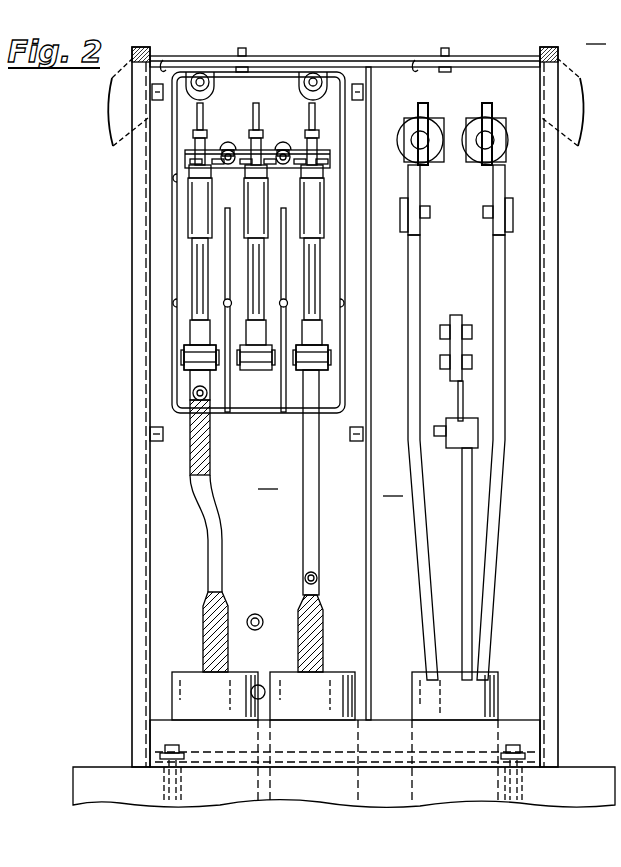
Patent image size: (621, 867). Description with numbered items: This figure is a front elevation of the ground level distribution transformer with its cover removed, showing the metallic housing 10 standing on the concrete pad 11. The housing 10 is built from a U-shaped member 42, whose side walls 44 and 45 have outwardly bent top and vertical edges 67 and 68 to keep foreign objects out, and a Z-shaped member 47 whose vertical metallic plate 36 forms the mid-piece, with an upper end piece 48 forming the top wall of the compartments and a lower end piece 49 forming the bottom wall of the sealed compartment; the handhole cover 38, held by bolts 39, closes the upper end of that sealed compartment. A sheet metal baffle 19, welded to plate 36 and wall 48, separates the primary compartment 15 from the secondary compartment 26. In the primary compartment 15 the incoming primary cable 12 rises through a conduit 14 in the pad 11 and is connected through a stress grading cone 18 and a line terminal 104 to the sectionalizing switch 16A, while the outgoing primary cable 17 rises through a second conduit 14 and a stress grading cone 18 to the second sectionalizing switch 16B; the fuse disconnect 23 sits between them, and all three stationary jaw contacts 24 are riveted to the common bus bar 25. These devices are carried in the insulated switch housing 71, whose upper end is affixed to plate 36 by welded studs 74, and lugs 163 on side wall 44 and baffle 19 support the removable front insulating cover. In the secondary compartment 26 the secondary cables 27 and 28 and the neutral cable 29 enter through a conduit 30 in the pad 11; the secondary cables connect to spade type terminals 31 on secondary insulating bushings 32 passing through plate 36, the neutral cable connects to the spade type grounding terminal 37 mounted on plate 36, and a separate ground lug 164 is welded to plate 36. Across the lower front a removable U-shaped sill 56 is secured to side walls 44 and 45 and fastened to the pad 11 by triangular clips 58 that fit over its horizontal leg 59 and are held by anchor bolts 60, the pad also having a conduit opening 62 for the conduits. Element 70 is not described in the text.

The metallic housing 10 is at (596, 36).
The concrete pad 11 is at (95, 776).
The incoming primary underground jacketed cable 12 is at (207, 516).
The conduit 14 is at (195, 682).
The primary compartment 15 is at (268, 481).
The sectionalizing switch 16A is at (196, 266).
The second sectionalizing switch 16B is at (320, 270).
The outgoing primary underground jacketed cable 17 is at (304, 516).
The stress grading cone 18 is at (210, 621).
The baffle 19 is at (370, 72).
The fuse disconnect 23 is at (257, 377).
The stationary jaw contact 24 is at (240, 146).
The bus bar 25 is at (188, 150).
The secondary compartment 26 is at (393, 488).
The secondary cable 27 is at (414, 446).
The secondary cable 28 is at (500, 386).
The neutral underground cable 29 is at (466, 491).
The conduit 30 is at (470, 698).
The spade type terminal 31 is at (486, 168).
The secondary insulating bushing 32 is at (444, 118).
The vertical metallic plate 36 is at (170, 483).
The spade type grounding terminal 37 is at (452, 315).
The handhole cover 38 is at (288, 56).
The bolts 39 is at (243, 50).
The U-shaped member 42 is at (566, 226).
The side wall 44 is at (147, 300).
The side wall 45 is at (546, 290).
The Z-shaped member 47 is at (507, 68).
The upper end piece 48 is at (162, 60).
The lower end piece 49 is at (224, 755).
The U-shaped sill 56 is at (150, 730).
The triangular clip 58 is at (200, 765).
The horizontally extending leg 59 is at (160, 764).
The anchor bolt 60 is at (175, 792).
The conduit opening 62 is at (172, 782).
The top edge 67 is at (130, 64).
The vertical edge 68 is at (141, 542).
The stud rod 70 is at (228, 427).
The switch housing 71 is at (341, 318).
The studs 74 is at (200, 73).
The line terminal 104 is at (200, 372).
The lug 163 is at (155, 92).
The ground lug 164 is at (305, 578).